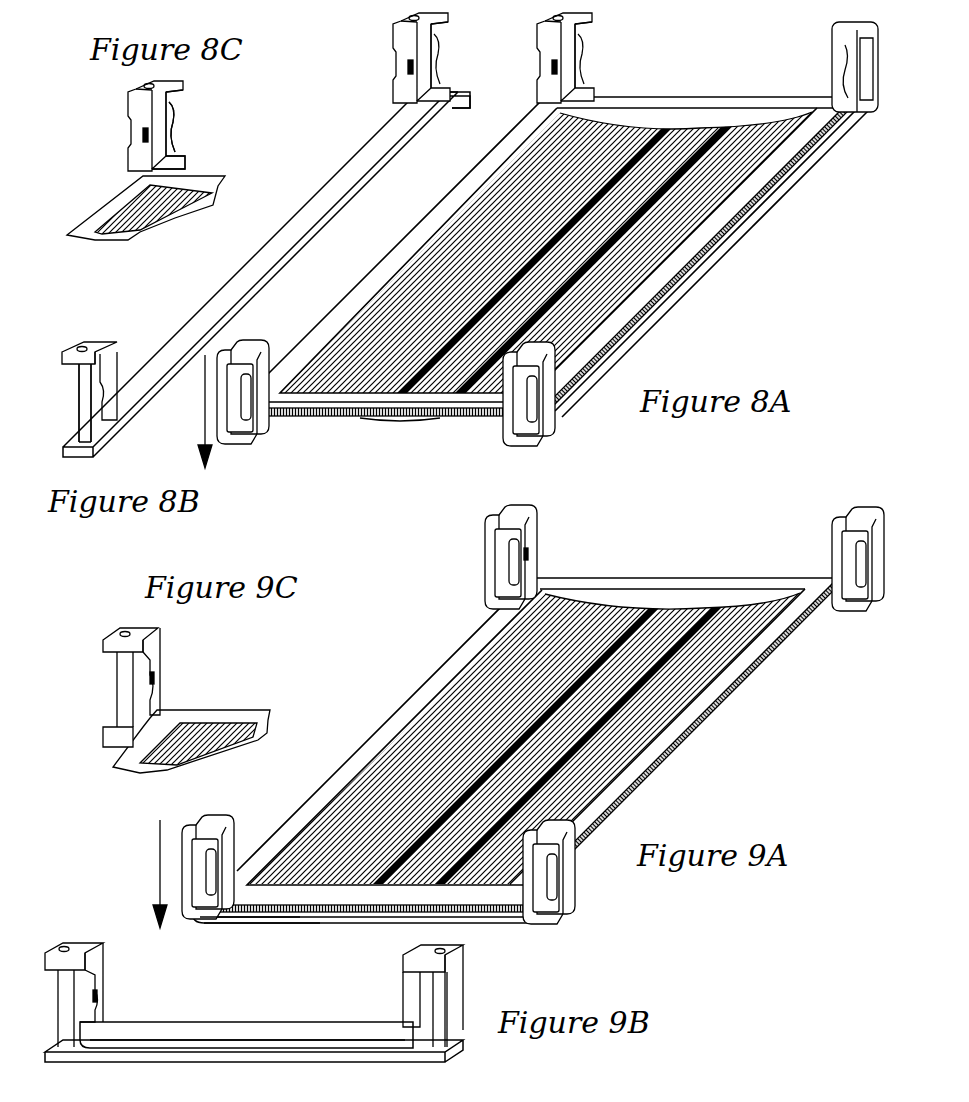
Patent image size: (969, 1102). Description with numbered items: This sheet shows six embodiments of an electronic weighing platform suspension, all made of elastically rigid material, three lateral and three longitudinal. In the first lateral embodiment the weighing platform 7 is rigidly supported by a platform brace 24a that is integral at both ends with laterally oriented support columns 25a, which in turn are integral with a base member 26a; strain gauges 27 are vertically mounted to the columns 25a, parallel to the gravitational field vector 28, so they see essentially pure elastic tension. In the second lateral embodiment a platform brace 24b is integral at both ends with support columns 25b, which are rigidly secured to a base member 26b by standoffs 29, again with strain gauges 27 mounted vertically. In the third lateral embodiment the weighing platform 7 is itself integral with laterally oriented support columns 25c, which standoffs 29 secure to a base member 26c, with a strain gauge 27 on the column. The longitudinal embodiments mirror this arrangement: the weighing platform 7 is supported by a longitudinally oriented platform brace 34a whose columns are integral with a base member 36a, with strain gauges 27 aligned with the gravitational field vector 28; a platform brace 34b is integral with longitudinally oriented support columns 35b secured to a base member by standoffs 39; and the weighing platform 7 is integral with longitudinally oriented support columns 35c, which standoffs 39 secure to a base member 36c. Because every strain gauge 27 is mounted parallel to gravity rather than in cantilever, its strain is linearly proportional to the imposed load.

In FIG. 8A, the weighing platform 7 is at (755, 213).
In FIG. 8C, the weighing platform 7 is at (100, 196).
In FIG. 9A, the weighing platform 7 is at (745, 685).
In FIG. 9C, the weighing platform 7 is at (242, 703).
In FIG. 8A, the platform brace 24a is at (653, 315).
In FIG. 8B, the platform brace 24b is at (293, 212).
In FIG. 8A, the support columns 25a is at (830, 45).
In FIG. 8B, the support columns 25b is at (100, 342).
In FIG. 8C, the support columns 25c is at (178, 97).
In FIG. 8A, the base member 26a is at (723, 263).
In FIG. 8B, the base member 26b is at (443, 93).
In FIG. 8C, the base member 26c is at (188, 158).
In FIG. 8A, the strain gauges 27 is at (560, 72).
In FIG. 8B, the strain gauges 27 is at (405, 72).
In FIG. 8C, the strain gauges 27 is at (140, 140).
In FIG. 9A, the strain gauges 27 is at (532, 553).
In FIG. 9B, the strain gauges 27 is at (100, 993).
In FIG. 9C, the strain gauges 27 is at (157, 678).
In FIG. 8B, the gravitational field vector 28 is at (200, 397).
In FIG. 9A, the gravitational field vector 28 is at (150, 885).
In FIG. 8B, the standoffs 29 is at (80, 395).
In FIG. 8C, the standoffs 29 is at (168, 129).
In FIG. 9B, the platform brace 34a is at (267, 917).
In FIG. 9B, the platform brace 34b is at (333, 1030).
In FIG. 9B, the support columns 35b is at (100, 960).
In FIG. 9C, the support columns 35c is at (100, 648).
In FIG. 9B, the base member 36a is at (300, 930).
In FIG. 9C, the base member 36c is at (100, 742).
In FIG. 9B, the standoffs 39 is at (440, 978).
In FIG. 9C, the standoffs 39 is at (115, 688).